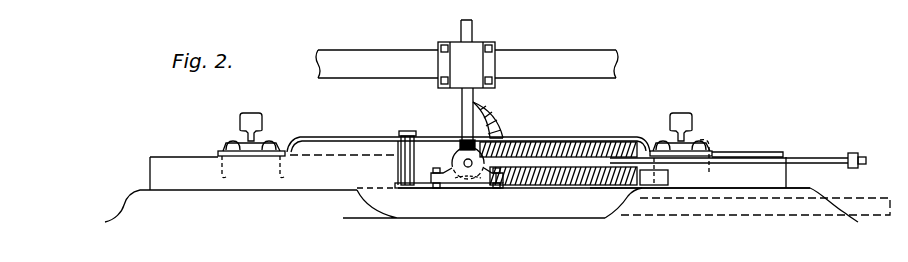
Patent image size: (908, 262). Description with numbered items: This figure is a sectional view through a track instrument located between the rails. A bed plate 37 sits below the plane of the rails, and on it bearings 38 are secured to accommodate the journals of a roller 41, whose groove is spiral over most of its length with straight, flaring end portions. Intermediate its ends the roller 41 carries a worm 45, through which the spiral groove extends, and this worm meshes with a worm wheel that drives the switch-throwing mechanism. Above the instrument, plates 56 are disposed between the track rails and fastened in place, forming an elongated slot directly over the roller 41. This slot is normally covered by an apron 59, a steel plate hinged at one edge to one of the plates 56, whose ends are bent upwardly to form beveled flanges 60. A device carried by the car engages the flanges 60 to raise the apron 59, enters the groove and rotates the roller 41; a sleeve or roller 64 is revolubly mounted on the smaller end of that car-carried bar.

The bed plate 37 is at (470, 188).
The bearings 38 is at (452, 162).
The roller 41 is at (484, 180).
The worm 45 is at (456, 180).
The plates 56 is at (433, 136).
The apron 59 is at (477, 109).
The beveled flanges 60 is at (493, 126).
The sleeve or roller 64 is at (462, 99).